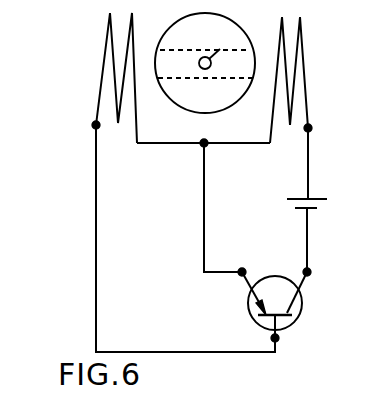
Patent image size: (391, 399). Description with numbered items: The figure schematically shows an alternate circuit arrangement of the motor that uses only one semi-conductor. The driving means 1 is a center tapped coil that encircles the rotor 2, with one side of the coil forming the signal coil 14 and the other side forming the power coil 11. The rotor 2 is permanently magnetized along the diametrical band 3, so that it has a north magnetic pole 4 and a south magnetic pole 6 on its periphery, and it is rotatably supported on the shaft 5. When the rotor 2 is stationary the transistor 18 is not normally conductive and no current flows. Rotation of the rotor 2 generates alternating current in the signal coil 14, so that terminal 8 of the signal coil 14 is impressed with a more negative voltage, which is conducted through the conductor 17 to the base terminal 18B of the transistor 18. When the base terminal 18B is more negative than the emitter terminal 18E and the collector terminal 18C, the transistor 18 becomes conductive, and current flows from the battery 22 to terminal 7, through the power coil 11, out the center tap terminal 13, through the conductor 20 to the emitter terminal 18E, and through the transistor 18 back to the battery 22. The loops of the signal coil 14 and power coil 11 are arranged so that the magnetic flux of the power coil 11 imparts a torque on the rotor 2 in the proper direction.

The driving means 1 is at (240, 143).
The rotor 2 is at (205, 63).
The diametrical band 3 is at (184, 56).
The north magnetic pole 4 is at (168, 66).
The shaft 5 is at (213, 51).
The south magnetic pole 6 is at (241, 75).
The terminal 7 is at (308, 128).
The terminal 8 is at (96, 125).
The power coil 11 is at (300, 17).
The center tap terminal 13 is at (204, 143).
The signal coil 14 is at (110, 13).
The conductor 17 is at (97, 223).
The transistor 18 is at (302, 297).
The base terminal 18B is at (278, 338).
The collector terminal 18C is at (307, 272).
The emitter terminal 18E is at (242, 272).
The conductor 20 is at (203, 232).
The battery 22 is at (318, 202).